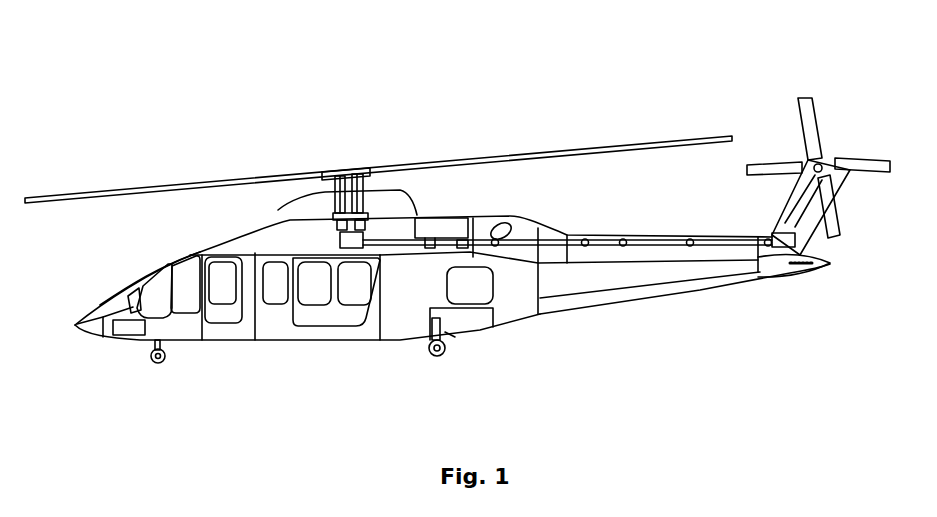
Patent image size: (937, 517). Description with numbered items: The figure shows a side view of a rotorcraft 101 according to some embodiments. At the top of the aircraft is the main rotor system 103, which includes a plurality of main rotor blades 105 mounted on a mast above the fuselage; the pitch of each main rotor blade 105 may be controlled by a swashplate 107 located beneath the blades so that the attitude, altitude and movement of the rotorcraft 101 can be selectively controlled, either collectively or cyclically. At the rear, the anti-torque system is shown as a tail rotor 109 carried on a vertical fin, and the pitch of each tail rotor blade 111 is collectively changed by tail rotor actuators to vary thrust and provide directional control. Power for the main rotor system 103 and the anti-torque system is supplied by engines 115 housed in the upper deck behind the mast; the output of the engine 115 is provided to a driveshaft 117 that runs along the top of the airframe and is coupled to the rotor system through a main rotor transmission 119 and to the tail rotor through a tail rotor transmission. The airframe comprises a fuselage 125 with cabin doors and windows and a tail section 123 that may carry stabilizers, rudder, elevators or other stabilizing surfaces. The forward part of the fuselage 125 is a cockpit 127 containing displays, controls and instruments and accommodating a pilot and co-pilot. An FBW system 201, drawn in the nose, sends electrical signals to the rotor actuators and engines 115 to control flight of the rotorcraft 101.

The rotorcraft 101 is at (229, 53).
The main rotor system 103 is at (370, 140).
The main rotor blades 105 is at (617, 144).
The swashplate 107 is at (368, 212).
The tail rotor 109 is at (826, 68).
The tail rotor blades 111 is at (880, 157).
The engines 115 is at (457, 218).
The driveshaft 117 is at (397, 243).
The main rotor transmission 119 is at (343, 238).
The tail section 123 is at (667, 292).
The fuselage 125 is at (300, 337).
The cockpit 127 is at (138, 280).
The FBW system 201 is at (115, 328).